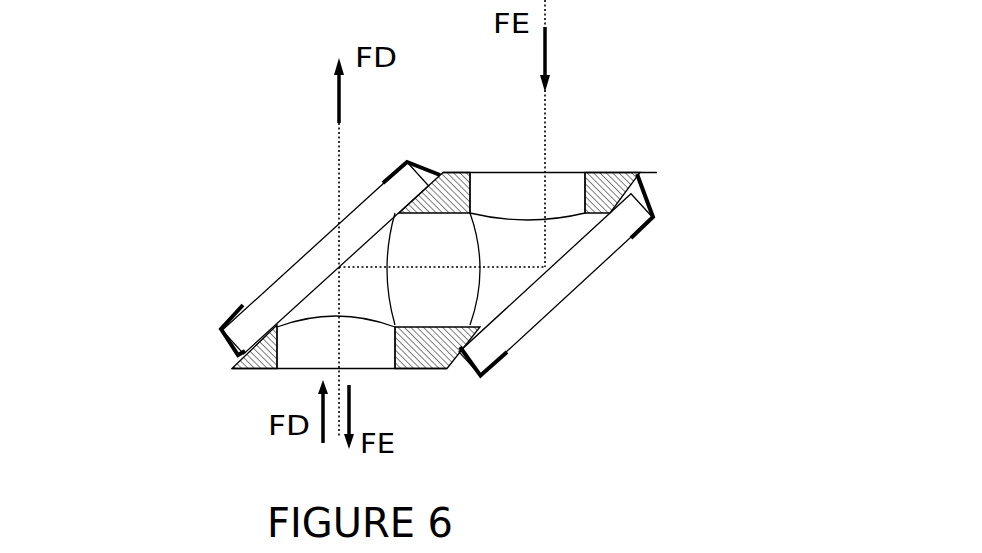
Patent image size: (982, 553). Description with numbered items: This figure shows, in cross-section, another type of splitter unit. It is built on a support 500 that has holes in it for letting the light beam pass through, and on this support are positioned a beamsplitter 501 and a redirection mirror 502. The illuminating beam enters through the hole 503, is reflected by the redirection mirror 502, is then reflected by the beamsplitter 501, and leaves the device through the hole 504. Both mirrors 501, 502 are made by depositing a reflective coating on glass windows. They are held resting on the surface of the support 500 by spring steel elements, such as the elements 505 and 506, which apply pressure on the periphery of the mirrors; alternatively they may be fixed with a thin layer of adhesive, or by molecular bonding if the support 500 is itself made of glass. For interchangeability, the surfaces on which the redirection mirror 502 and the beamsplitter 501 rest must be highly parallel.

The support 500 is at (505, 238).
The beamsplitter 501 is at (279, 255).
The redirection mirror 502 is at (566, 318).
The hole 503 is at (529, 162).
The hole 504 is at (377, 382).
The spring steel element 505 is at (218, 303).
The spring steel element 506 is at (374, 163).